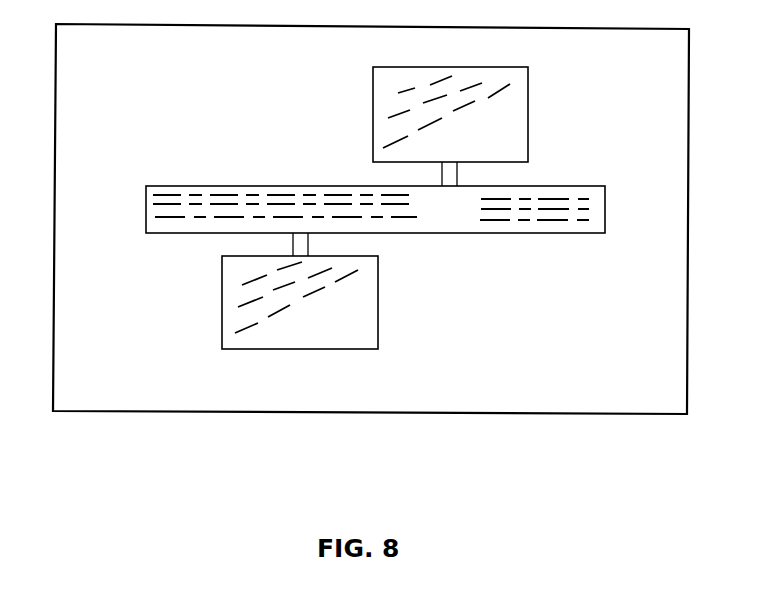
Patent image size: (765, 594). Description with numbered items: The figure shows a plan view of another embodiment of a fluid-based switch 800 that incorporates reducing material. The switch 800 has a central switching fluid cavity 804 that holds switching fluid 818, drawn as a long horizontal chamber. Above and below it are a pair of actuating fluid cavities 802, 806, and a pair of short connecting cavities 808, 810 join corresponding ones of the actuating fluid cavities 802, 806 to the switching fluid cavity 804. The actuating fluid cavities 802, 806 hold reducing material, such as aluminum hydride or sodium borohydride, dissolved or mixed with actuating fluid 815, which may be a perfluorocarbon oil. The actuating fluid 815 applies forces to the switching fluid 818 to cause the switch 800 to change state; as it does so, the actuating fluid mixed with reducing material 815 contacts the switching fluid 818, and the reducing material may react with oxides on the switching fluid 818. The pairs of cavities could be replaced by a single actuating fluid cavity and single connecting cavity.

The switch 800 is at (661, 390).
The actuating fluid cavity 802 is at (366, 340).
The switching fluid cavity 804 is at (568, 168).
The actuating fluid cavity 806 is at (516, 152).
The connecting cavity 808 is at (293, 239).
The connecting cavity 810 is at (440, 165).
The actuating fluid 815 is at (408, 111).
The switching fluid 818 is at (373, 207).